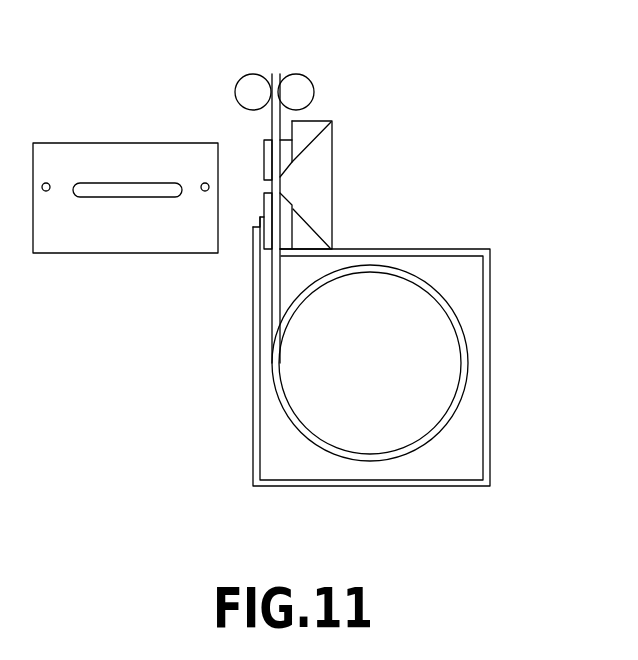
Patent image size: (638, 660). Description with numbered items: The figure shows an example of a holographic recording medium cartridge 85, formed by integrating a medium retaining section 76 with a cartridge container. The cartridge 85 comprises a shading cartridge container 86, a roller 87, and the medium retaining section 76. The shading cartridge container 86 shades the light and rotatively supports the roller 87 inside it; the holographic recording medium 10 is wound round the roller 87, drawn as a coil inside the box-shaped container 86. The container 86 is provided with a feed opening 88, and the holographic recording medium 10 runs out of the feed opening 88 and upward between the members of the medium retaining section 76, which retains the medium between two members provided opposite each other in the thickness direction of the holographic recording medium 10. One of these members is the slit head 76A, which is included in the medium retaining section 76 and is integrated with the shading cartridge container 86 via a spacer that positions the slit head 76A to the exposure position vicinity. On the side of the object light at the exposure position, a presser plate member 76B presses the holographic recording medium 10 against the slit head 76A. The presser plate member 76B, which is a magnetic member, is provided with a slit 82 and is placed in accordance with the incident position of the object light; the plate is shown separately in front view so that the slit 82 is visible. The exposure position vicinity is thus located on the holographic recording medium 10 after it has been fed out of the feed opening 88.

The holographic recording medium 10 is at (272, 133).
The medium retaining section 76 is at (344, 89).
The slit head 76A is at (312, 132).
The presser plate member 76B is at (264, 160).
The slit 82 is at (260, 187).
The holographic recording medium cartridge 85 is at (478, 204).
The shading cartridge container 86 is at (490, 283).
The roller 87 is at (418, 382).
The feed opening 88 is at (267, 260).